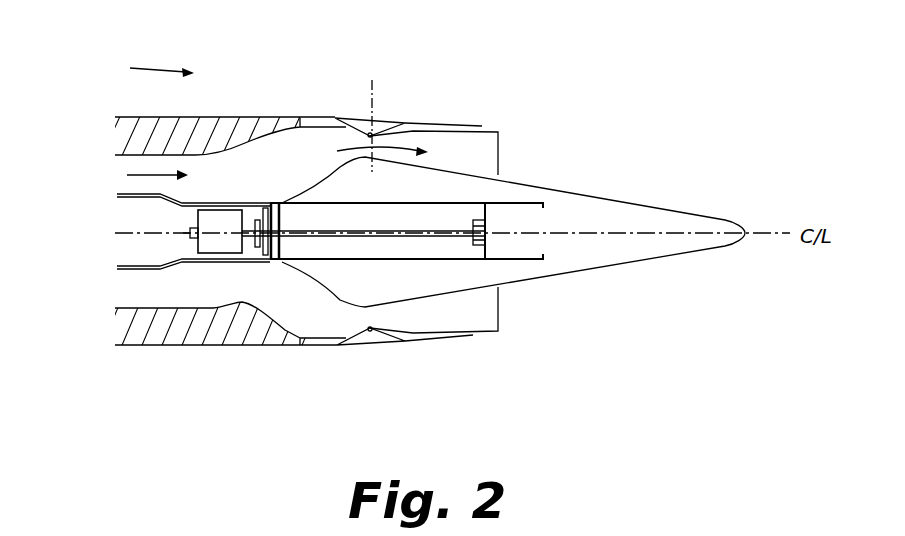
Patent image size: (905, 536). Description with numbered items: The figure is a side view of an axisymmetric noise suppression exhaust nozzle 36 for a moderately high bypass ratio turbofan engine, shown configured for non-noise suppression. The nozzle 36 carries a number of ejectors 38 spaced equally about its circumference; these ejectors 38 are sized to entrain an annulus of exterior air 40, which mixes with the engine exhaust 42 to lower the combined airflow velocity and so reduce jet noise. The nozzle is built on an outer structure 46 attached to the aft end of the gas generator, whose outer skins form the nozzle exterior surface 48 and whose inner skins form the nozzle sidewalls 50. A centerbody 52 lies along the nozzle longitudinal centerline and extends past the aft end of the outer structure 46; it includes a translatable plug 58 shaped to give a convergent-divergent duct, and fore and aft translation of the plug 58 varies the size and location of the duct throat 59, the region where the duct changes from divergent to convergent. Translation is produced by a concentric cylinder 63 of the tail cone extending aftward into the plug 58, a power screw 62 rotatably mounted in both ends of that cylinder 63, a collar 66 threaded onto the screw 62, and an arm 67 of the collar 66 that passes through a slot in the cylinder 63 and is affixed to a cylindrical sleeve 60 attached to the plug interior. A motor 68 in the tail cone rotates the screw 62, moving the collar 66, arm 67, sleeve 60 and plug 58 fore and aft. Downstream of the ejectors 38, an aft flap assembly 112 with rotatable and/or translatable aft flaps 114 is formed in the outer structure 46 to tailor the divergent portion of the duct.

The noise suppression exhaust nozzle 36 is at (493, 208).
The ejector 38 is at (346, 90).
The exterior air 40 is at (160, 70).
The engine exhaust 42 is at (143, 178).
The outer structure 46 is at (210, 335).
The nozzle exterior surface 48 is at (162, 100).
The nozzle sidewalls 50 is at (232, 295).
The centerbody 52 is at (152, 273).
The translatable plug 58 is at (601, 192).
The duct throat 59 is at (378, 74).
The cylindrical sleeve 60 is at (372, 257).
The power screw 62 is at (378, 222).
The concentric cylinder 63 is at (280, 215).
The collar 66 is at (486, 204).
The arm 67 is at (482, 244).
The motor 68 is at (200, 245).
The aft flap assembly 112 is at (484, 346).
The aft flaps 114 is at (438, 121).